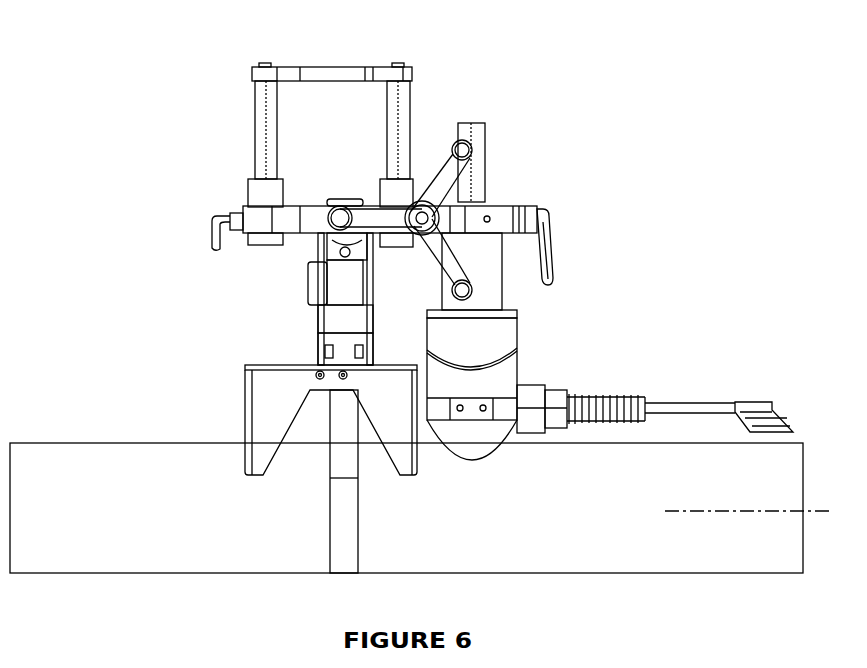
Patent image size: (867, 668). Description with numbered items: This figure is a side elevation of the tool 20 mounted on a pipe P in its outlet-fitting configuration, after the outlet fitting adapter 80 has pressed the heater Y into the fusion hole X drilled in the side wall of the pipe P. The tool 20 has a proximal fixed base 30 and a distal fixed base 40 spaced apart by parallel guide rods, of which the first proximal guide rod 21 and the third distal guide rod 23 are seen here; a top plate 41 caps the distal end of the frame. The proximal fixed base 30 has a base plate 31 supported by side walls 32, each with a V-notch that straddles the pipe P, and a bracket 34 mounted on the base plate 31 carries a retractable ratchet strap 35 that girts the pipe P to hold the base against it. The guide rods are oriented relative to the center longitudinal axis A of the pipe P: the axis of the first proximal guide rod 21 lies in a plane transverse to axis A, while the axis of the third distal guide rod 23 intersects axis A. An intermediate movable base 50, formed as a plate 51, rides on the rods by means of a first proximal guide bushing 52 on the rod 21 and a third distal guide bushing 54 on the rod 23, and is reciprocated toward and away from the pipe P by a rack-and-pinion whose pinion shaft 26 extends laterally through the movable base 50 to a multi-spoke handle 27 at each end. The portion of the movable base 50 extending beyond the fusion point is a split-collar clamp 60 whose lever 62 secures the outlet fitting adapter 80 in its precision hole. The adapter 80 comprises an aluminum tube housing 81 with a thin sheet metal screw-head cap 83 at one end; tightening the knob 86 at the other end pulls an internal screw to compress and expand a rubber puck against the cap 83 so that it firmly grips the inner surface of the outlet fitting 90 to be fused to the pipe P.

The tool 20 is at (168, 26).
The first proximal guide rod 21 is at (397, 105).
The third distal guide rod 23 is at (260, 105).
The pinion shaft 26 is at (423, 220).
The multi-spoke handle 27 is at (373, 217).
The proximal fixed base 30 is at (208, 372).
The base plate 31 is at (248, 365).
The side wall 32 is at (263, 410).
The bracket 34 is at (318, 330).
The retractable ratchet strap 35 is at (331, 542).
The distal fixed base 40 is at (133, 95).
The top plate 41 is at (292, 66).
The intermediate movable base 50 is at (116, 209).
The plate 51 is at (308, 205).
The first proximal guide bushing 52 is at (392, 188).
The third distal guide bushing 54 is at (255, 188).
The split-collar clamp 60 is at (565, 200).
The lever 62 is at (545, 243).
The outlet fitting adapter 80 is at (540, 130).
The tube housing 81 is at (500, 290).
The screw-head cap 83 is at (436, 310).
The knob 86 is at (478, 133).
The outlet fitting 90 is at (594, 338).
The fusion hole X is at (455, 458).
The heater Y is at (498, 447).
The center longitudinal axis A is at (818, 500).
The pipe P is at (712, 555).